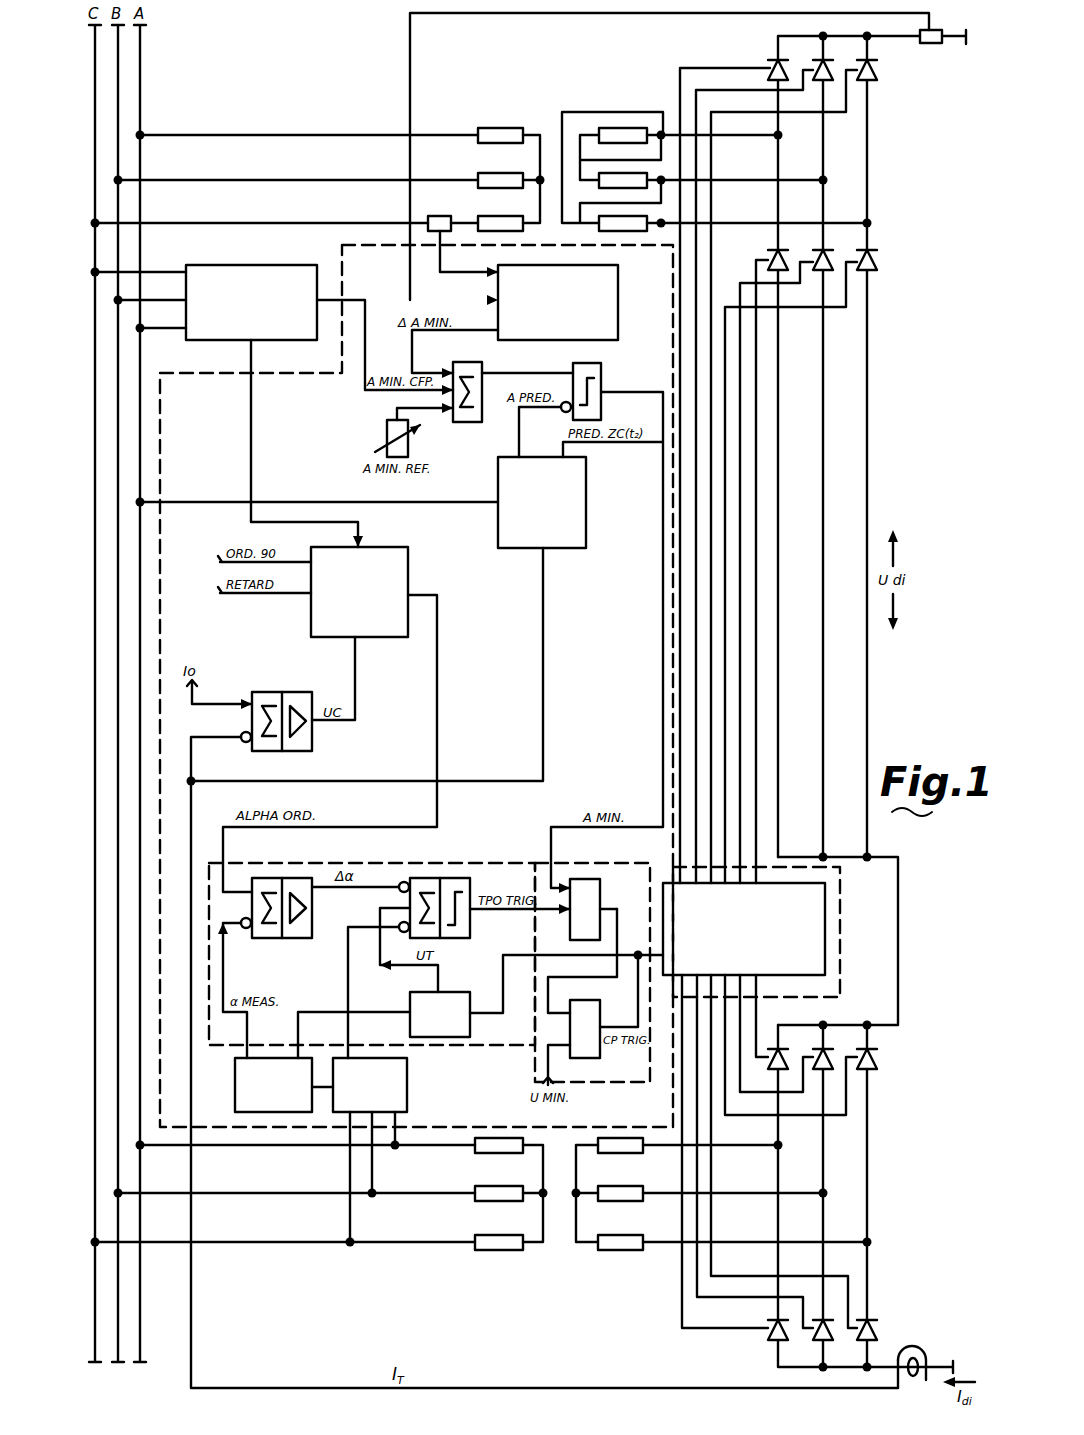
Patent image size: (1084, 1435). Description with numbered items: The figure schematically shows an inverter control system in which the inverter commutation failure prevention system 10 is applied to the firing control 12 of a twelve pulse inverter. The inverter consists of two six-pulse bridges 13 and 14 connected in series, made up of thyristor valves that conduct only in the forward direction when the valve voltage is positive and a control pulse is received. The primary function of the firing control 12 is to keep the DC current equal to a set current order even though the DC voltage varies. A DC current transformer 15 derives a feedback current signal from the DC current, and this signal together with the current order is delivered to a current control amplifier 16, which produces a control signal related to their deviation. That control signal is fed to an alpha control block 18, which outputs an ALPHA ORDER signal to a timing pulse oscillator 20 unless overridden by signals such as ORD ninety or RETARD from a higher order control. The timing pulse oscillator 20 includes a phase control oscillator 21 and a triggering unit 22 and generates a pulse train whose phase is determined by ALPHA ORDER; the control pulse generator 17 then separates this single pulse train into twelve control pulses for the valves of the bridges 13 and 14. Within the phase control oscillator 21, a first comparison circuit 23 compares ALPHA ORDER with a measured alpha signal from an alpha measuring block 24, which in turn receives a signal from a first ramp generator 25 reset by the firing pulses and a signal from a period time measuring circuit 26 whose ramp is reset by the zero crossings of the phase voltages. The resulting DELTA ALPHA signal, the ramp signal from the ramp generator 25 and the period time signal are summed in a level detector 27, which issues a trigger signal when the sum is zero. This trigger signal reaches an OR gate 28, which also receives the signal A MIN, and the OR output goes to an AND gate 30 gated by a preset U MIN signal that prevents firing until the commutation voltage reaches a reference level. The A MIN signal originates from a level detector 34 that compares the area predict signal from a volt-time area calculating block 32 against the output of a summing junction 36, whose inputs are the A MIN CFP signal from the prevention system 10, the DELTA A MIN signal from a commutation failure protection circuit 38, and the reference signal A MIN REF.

The inverter commutation failure prevention system 10 is at (232, 264).
The firing control 12 is at (342, 245).
The six-pulse bridge 13 is at (886, 1217).
The six-pulse bridge 14 is at (888, 219).
The DC current transformer 15 is at (917, 1352).
The current control amplifier 16 is at (316, 692).
The control pulse generator 17 is at (826, 924).
The alpha control block 18 is at (410, 560).
The timing pulse oscillator 20 is at (500, 862).
The phase control oscillator 21 is at (458, 1048).
The triggering unit 22 is at (613, 1086).
The first comparison circuit 23 is at (302, 940).
The alpha measuring block 24 is at (235, 1087).
The first ramp generator 25 is at (452, 992).
The period time measuring circuit 26 is at (407, 1105).
The level detector 27 is at (472, 896).
The OR gate 28 is at (600, 892).
The AND gate 30 is at (590, 1000).
The volt-time area calculating block 32 is at (587, 540).
The level detector 34 is at (602, 370).
The summing junction 36 is at (454, 361).
The commutation failure protection circuit 38 is at (618, 312).